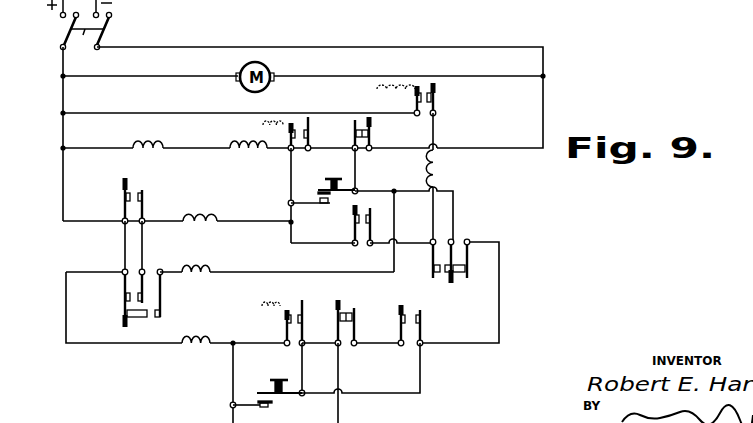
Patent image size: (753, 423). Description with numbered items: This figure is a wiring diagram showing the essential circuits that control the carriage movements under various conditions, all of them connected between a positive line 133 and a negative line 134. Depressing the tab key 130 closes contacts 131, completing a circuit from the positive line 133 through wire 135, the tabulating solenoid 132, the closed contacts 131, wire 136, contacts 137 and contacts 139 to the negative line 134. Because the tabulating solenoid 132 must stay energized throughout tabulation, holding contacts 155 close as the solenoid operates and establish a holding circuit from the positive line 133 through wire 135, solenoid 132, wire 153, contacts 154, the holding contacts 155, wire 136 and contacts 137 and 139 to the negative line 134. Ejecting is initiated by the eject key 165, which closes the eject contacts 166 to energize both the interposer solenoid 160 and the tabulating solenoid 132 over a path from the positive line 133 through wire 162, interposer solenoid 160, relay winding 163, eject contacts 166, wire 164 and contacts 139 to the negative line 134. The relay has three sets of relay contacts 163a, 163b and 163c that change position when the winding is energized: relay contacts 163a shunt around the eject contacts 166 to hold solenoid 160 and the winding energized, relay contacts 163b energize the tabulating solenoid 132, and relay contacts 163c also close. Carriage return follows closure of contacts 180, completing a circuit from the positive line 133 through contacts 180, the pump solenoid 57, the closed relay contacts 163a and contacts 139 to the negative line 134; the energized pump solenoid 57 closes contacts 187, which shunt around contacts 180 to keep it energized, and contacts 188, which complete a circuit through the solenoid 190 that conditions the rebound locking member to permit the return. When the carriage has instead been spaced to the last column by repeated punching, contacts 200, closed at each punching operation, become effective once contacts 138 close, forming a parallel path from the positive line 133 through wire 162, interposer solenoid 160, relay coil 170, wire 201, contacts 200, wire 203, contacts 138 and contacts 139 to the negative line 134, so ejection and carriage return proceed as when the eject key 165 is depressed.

The positive line 133 is at (63, 99).
The negative line 134 is at (380, 48).
The wire 162 is at (89, 150).
The interposer solenoid 160 is at (137, 139).
The relay winding 163 is at (262, 122).
The relay contacts 163a is at (300, 122).
The relay contacts 163b is at (295, 312).
The relay contacts 163c is at (423, 85).
The wire 164 is at (353, 162).
The contacts 139 is at (370, 137).
The relay coil 170 is at (438, 178).
The eject key 165 is at (335, 171).
The eject contacts 166 is at (317, 197).
The contacts 200 is at (362, 215).
The wire 201 is at (330, 236).
The wire 203 is at (403, 245).
The pump solenoid 57 is at (215, 209).
The contacts 180 is at (146, 189).
The wire 135 is at (108, 255).
The contacts 187 is at (131, 291).
The contacts 188 is at (150, 317).
The solenoid 190 is at (215, 268).
The tabulating solenoid 132 is at (217, 332).
The wire 153 is at (230, 379).
The tab key 130 is at (285, 377).
The contacts 131 is at (272, 399).
The contacts 154 is at (347, 310).
The holding contacts 155 is at (413, 310).
The wire 136 is at (455, 343).
The contacts 137 is at (460, 276).
The contacts 138 is at (446, 276).